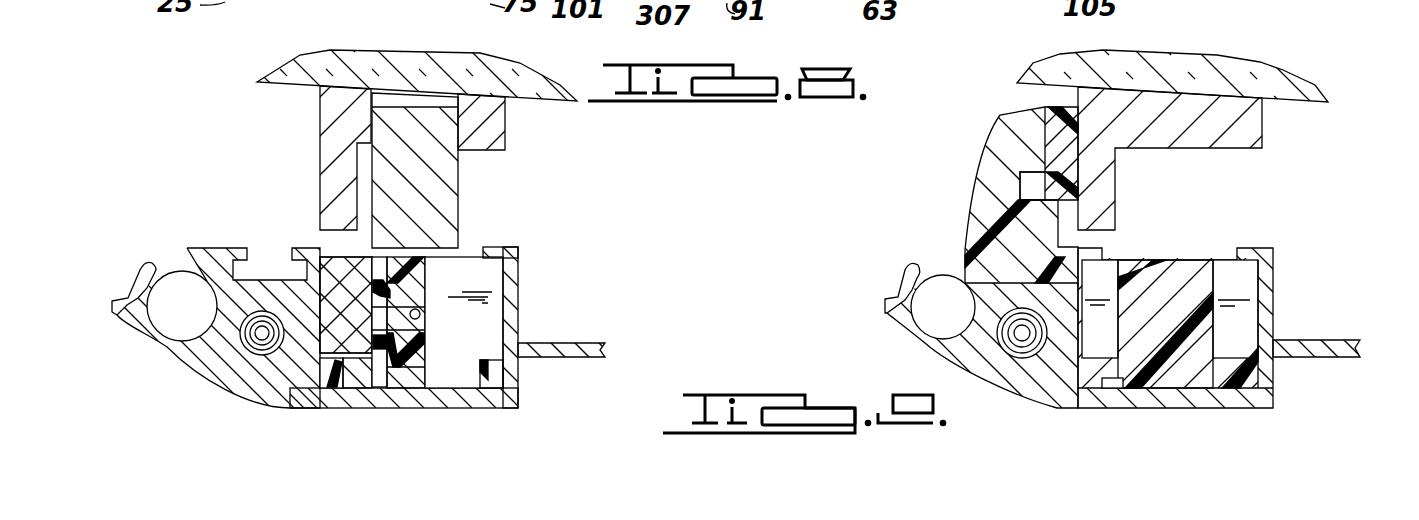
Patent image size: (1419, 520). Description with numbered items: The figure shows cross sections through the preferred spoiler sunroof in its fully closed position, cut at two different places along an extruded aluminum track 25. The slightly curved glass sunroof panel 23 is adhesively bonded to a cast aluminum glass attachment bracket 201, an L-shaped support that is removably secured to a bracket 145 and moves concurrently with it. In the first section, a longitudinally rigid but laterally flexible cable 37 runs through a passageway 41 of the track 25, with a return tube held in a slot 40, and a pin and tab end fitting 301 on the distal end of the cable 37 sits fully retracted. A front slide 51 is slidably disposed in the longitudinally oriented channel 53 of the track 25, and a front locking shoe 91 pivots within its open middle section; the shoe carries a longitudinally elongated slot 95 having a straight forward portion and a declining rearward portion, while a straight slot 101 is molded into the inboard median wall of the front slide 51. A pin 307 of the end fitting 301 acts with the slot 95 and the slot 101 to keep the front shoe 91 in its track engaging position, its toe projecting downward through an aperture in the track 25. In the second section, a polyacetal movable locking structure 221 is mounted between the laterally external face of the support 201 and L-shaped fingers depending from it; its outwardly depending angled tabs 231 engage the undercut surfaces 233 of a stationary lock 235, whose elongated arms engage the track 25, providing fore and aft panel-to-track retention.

In FIG. 8, the sunroof panel 23 is at (372, 62).
In FIG. 9, the sunroof panel 23 is at (1283, 72).
In FIG. 8, the glass attachment bracket 201 is at (330, 126).
In FIG. 9, the glass attachment bracket 201 is at (1248, 140).
In FIG. 8, the bracket 145 is at (432, 180).
In FIG. 8, the track 25 is at (268, 395).
In FIG. 9, the track 25 is at (1270, 396).
In FIG. 8, the slot 40 is at (182, 271).
In FIG. 9, the slot 40 is at (900, 278).
In FIG. 8, the cable 37 is at (263, 336).
In FIG. 9, the cable 37 is at (1020, 332).
In FIG. 8, the passageway 41 is at (258, 340).
In FIG. 9, the passageway 41 is at (1012, 347).
In FIG. 8, the pin and tab end fitting 301 is at (360, 357).
In FIG. 8, the slot 95 is at (380, 332).
In FIG. 8, the front locking shoe 91 is at (414, 311).
In FIG. 8, the slot 101 is at (440, 262).
In FIG. 8, the pin 307 is at (423, 327).
In FIG. 8, the channel 53 is at (497, 314).
In FIG. 9, the channel 53 is at (1242, 286).
In FIG. 8, the front slide 51 is at (337, 385).
In FIG. 9, the front slide 51 is at (1183, 285).
In FIG. 9, the stationary lock 235 is at (972, 243).
In FIG. 9, the movable locking structure 221 is at (1055, 128).
In FIG. 9, the undercut surface 233 is at (1025, 177).
In FIG. 9, the angled tab 231 is at (1032, 190).